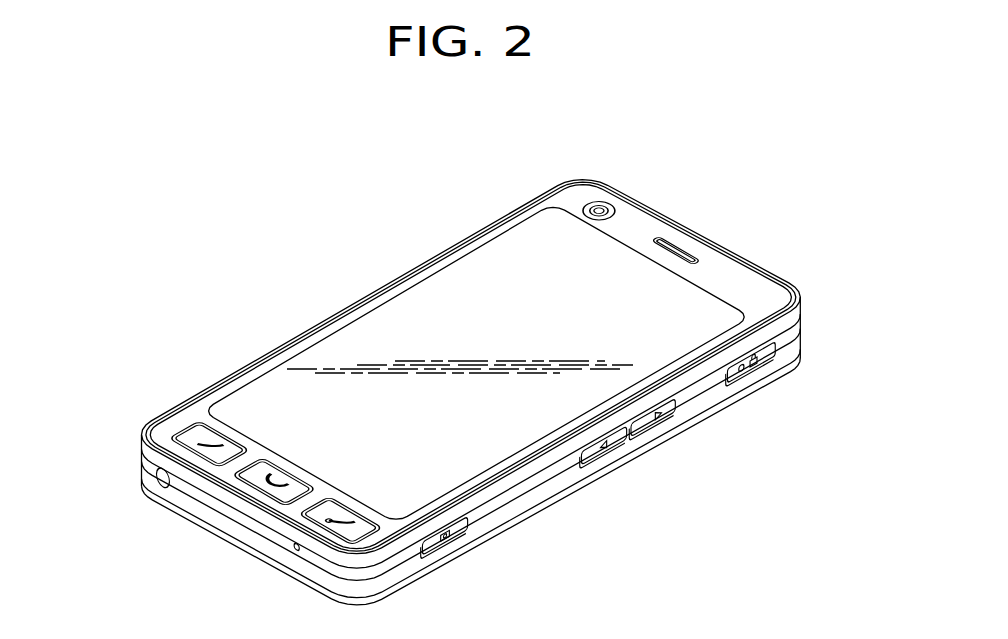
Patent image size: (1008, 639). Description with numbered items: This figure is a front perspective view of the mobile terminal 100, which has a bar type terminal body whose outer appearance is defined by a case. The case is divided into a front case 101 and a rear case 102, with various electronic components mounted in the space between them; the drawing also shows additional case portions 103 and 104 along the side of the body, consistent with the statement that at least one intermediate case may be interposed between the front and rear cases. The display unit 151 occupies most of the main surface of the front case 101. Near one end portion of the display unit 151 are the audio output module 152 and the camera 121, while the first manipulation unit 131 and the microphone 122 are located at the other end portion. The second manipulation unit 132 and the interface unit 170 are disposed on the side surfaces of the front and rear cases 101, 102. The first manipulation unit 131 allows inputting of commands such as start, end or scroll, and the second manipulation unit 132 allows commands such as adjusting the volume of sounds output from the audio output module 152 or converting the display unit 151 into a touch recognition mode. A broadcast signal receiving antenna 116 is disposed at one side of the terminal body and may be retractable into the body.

The mobile terminal 100 is at (430, 226).
The front case 101 is at (765, 260).
The rear case 102 is at (800, 295).
The middle case 103 is at (794, 328).
The rear case 104 is at (795, 348).
The broadcast signal receiving antenna 116 is at (161, 484).
The camera 121 is at (604, 209).
The microphone 122 is at (294, 550).
The first manipulation unit 131 is at (195, 435).
The second manipulation unit 132 is at (607, 452).
The display unit 151 is at (403, 302).
The audio output module 152 is at (677, 251).
The interface unit 170 is at (753, 368).